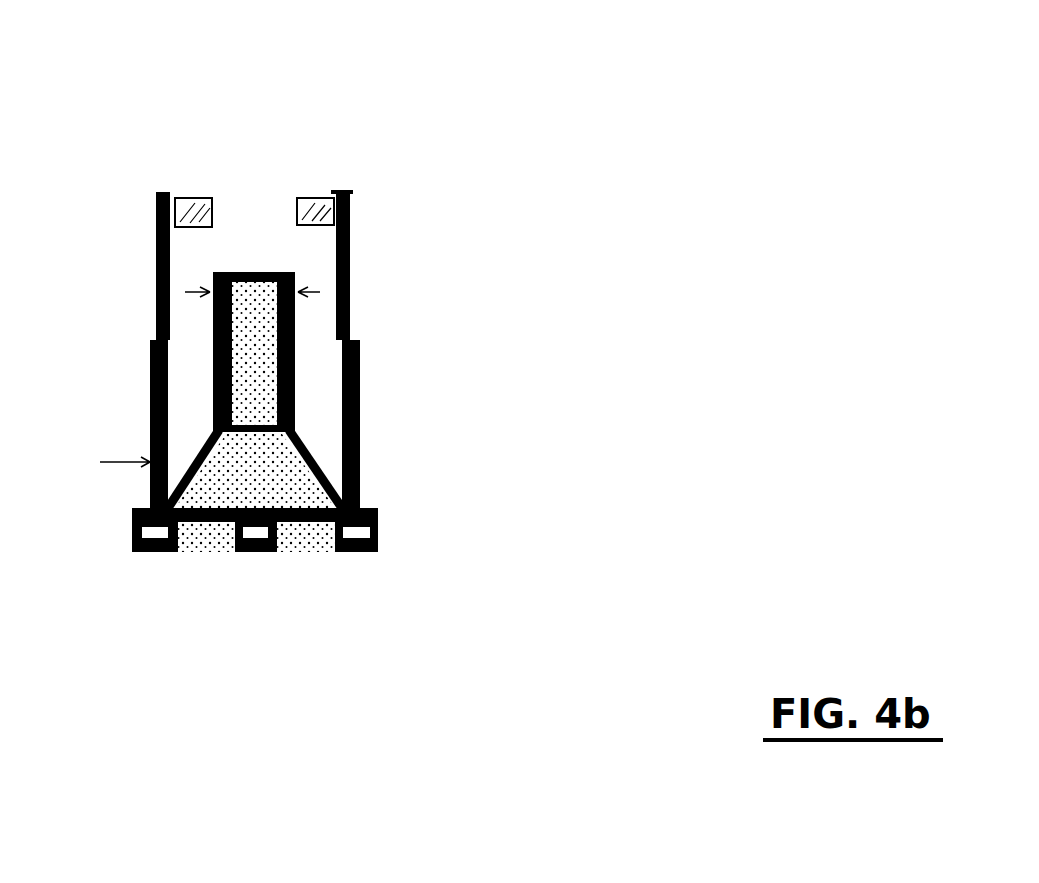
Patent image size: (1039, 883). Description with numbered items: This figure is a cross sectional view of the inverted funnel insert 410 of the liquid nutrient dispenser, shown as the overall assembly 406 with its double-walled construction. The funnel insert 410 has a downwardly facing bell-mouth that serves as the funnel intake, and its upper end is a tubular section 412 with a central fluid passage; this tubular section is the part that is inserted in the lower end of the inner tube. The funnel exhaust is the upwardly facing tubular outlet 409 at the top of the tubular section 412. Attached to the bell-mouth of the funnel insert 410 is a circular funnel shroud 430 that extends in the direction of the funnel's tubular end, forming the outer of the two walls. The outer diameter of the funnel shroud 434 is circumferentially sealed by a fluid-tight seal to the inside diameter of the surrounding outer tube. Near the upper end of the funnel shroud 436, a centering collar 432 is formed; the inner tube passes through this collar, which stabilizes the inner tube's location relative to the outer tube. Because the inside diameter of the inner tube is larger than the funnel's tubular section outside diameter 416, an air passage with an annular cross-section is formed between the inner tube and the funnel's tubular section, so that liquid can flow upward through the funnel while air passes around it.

The nozzle assembly 406 is at (447, 130).
The tubular outlet 409 is at (296, 272).
The funnel insert 410 is at (313, 453).
The tubular section 412 is at (293, 343).
The funnel's tubular section outside diameter 416 is at (189, 292).
The funnel shroud 430 is at (158, 318).
The centering collar 432 is at (190, 200).
The outer diameter of the funnel shroud 434 is at (407, 463).
The upper end of the funnel shroud 436 is at (347, 188).